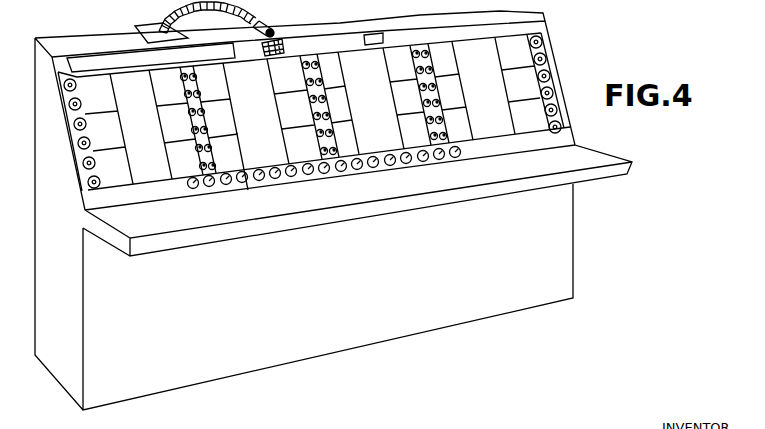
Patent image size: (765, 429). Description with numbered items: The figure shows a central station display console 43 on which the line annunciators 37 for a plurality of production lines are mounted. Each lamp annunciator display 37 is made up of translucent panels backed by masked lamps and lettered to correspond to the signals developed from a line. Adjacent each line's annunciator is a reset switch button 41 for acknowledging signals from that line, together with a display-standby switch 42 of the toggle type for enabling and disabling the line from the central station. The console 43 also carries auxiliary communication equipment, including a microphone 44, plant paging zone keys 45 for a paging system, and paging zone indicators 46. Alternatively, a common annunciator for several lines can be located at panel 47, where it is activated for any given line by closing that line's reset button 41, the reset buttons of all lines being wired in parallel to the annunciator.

The lamp annunciator display 37 is at (107, 97).
The reset switch button 41 is at (64, 86).
The display-standby switch 42 is at (69, 107).
The console 43 is at (395, 19).
The microphone 44 is at (268, 5).
The plant paging zone keys 45 is at (272, 181).
The paging zone indicators 46 is at (322, 176).
The panel 47 is at (285, 46).